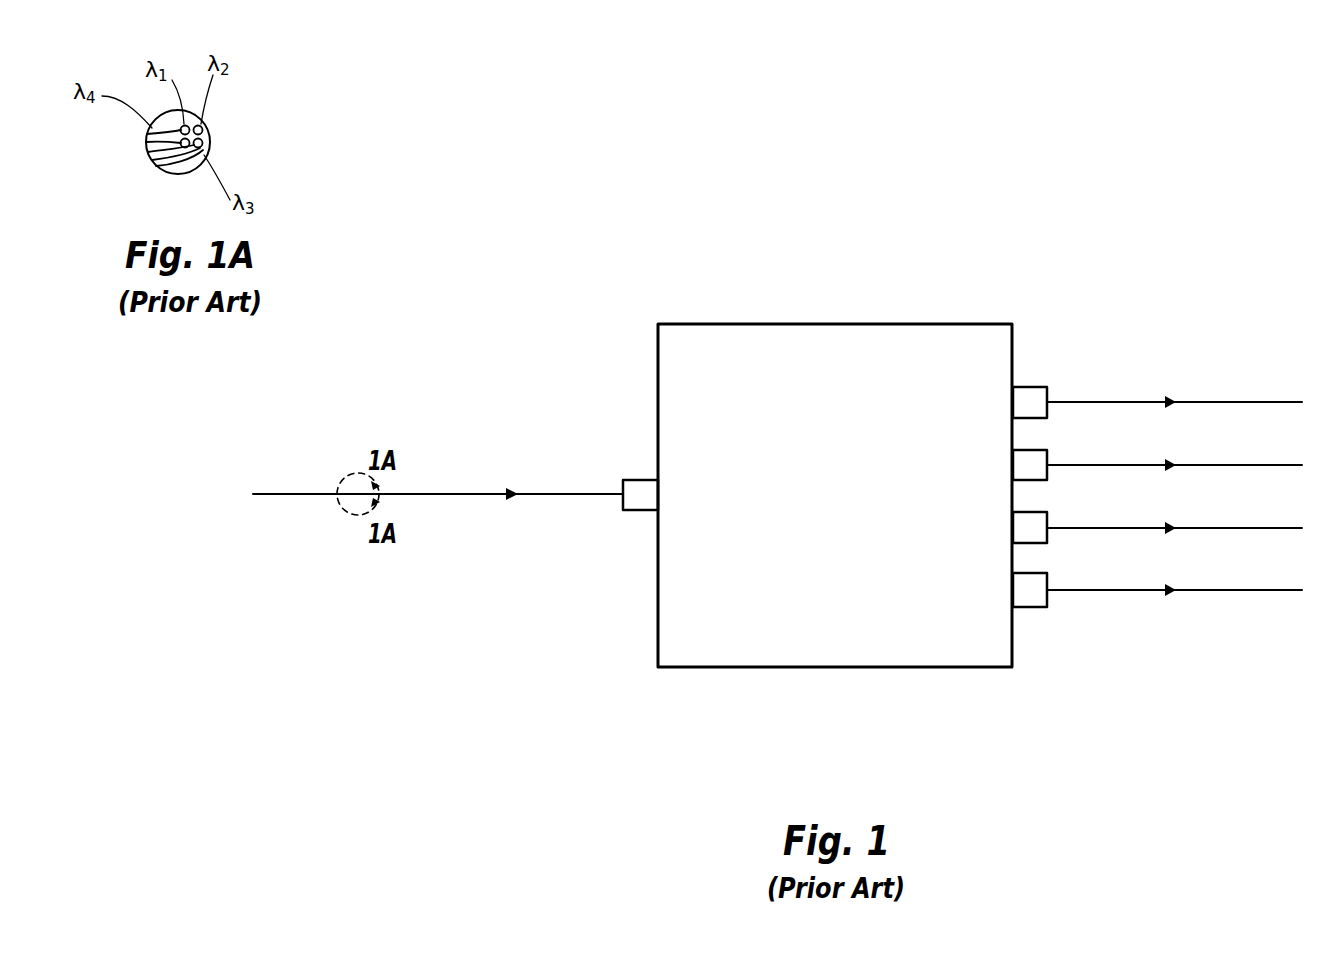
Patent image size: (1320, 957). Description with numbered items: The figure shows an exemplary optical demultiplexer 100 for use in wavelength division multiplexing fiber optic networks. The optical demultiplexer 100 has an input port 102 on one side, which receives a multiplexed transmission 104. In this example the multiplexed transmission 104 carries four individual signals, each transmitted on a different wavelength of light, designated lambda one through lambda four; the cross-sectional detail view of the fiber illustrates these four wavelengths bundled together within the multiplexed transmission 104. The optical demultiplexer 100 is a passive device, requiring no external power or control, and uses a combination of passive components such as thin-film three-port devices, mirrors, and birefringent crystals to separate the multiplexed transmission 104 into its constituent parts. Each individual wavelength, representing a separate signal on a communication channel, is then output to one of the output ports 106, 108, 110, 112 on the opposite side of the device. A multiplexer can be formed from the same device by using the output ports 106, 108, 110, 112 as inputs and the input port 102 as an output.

In FIG. 1, the optical demultiplexer 100 is at (712, 691).
In FIG. 1, the input port 102 is at (640, 480).
In FIG. 1A, the multiplexed transmission 104 is at (207, 128).
In FIG. 1, the multiplexed transmission 104 is at (420, 492).
In FIG. 1, the output port 106 is at (1047, 387).
In FIG. 1, the output port 108 is at (1047, 450).
In FIG. 1, the output port 110 is at (1047, 512).
In FIG. 1, the output port 112 is at (1047, 573).